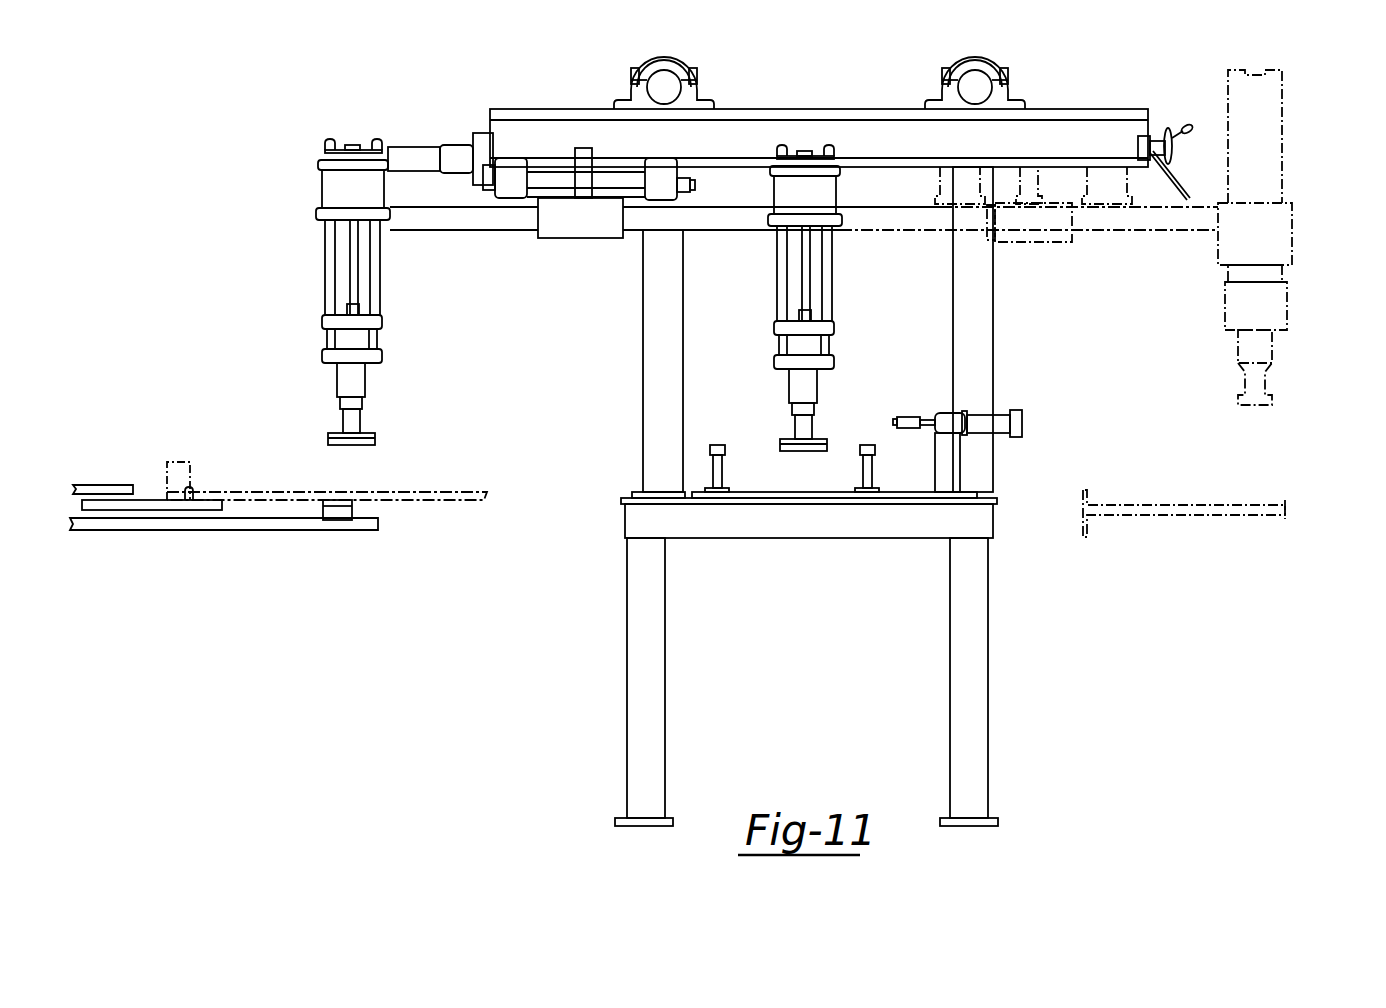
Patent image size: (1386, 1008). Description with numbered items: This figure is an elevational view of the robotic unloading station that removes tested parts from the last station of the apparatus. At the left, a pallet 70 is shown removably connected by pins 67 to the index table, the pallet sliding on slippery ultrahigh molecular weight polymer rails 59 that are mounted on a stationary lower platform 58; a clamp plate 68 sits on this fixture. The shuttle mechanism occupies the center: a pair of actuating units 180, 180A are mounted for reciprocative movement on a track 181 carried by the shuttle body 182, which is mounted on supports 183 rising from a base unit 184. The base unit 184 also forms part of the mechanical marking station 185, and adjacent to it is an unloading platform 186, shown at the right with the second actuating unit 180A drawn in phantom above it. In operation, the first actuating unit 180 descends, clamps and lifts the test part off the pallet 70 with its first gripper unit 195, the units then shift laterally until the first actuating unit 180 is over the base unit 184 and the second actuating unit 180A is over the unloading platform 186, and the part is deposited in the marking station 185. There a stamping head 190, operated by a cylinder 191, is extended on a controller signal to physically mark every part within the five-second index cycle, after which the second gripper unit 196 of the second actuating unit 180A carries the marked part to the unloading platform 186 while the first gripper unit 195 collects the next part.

The stationary lower platform 58 is at (312, 527).
The polymer rails 59 is at (350, 514).
The pins 67 is at (195, 492).
The clamp plate 68 is at (108, 488).
The pallet 70 is at (490, 500).
The first actuating unit 180 is at (375, 338).
The second actuating unit 180A is at (830, 343).
The track 181 is at (873, 160).
The shuttle body 182 is at (742, 148).
The supports 183 is at (652, 400).
The base unit 184 is at (1000, 527).
The mechanical marking station 185 is at (797, 580).
The unloading platform 186 is at (1228, 515).
The stamping head 190 is at (907, 416).
The cylinder 191 is at (1000, 432).
The first gripper unit 195 is at (372, 432).
The second gripper unit 196 is at (795, 427).